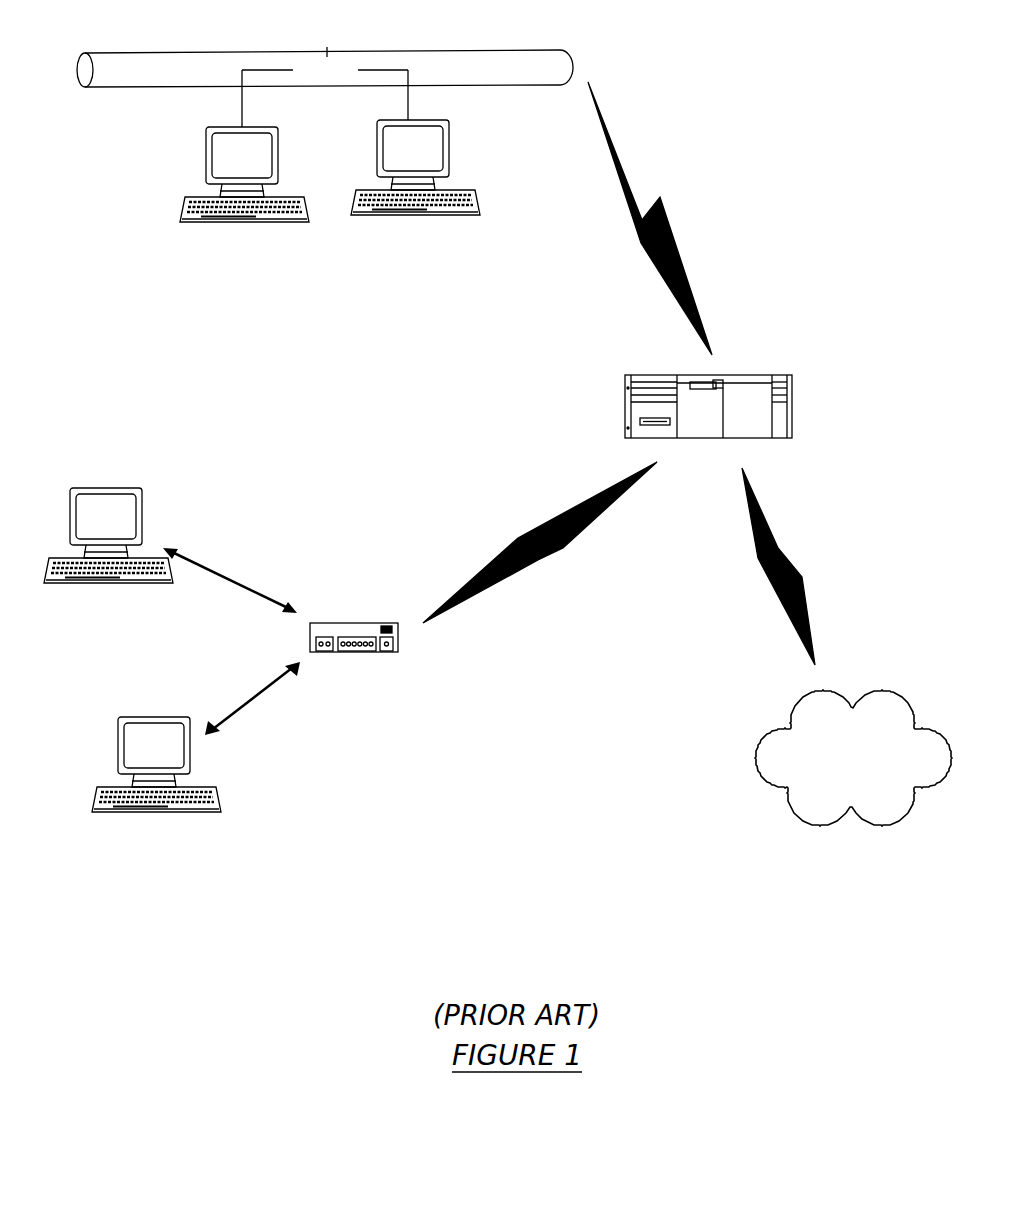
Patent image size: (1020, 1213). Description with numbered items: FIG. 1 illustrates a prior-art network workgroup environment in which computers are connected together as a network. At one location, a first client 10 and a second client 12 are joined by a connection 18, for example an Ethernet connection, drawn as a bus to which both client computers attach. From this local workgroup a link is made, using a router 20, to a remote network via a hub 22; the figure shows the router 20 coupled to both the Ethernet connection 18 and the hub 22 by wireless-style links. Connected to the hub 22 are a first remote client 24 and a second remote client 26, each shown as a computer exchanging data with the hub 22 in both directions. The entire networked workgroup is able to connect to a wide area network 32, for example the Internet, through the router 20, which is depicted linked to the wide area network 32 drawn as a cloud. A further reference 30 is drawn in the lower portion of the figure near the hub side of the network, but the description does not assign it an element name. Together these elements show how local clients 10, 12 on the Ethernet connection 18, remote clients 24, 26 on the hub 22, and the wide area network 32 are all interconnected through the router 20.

The first client 10 is at (278, 155).
The second client 12 is at (448, 157).
The connection 18 is at (345, 50).
The router 20 is at (628, 385).
The hub 22 is at (370, 622).
The first remote client 24 is at (140, 483).
The second remote client 26 is at (203, 818).
The wireless network link 30 is at (427, 823).
The wide area network 32 is at (793, 815).